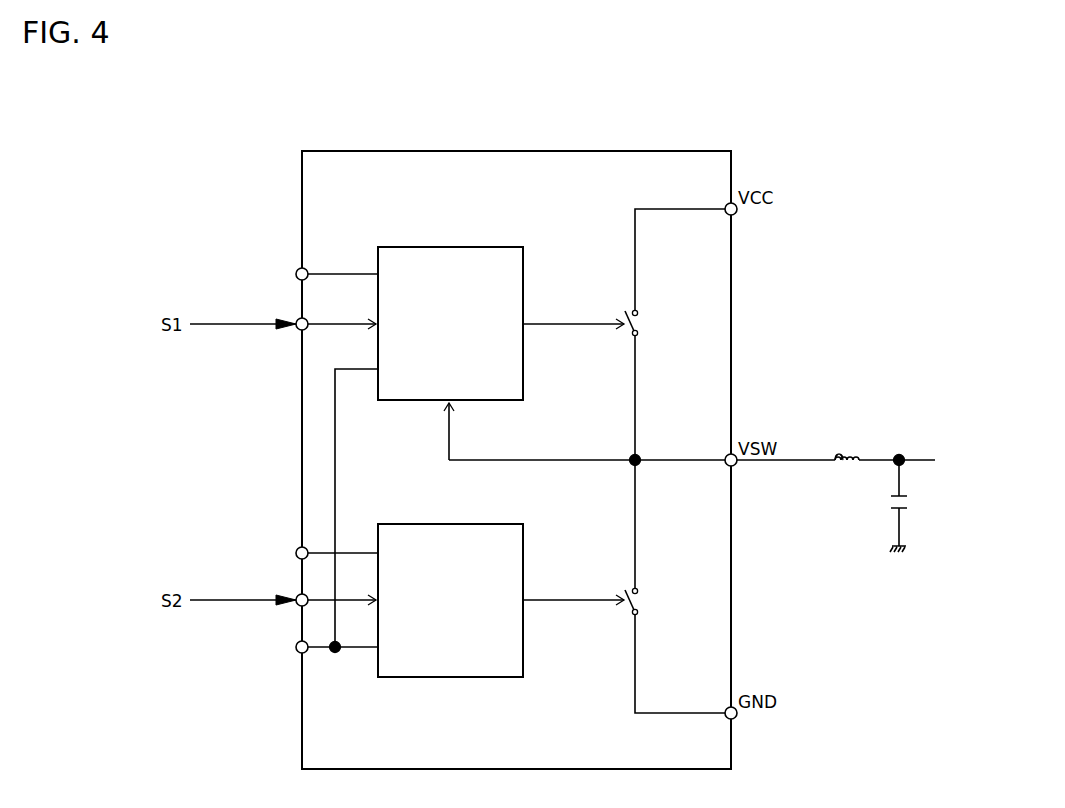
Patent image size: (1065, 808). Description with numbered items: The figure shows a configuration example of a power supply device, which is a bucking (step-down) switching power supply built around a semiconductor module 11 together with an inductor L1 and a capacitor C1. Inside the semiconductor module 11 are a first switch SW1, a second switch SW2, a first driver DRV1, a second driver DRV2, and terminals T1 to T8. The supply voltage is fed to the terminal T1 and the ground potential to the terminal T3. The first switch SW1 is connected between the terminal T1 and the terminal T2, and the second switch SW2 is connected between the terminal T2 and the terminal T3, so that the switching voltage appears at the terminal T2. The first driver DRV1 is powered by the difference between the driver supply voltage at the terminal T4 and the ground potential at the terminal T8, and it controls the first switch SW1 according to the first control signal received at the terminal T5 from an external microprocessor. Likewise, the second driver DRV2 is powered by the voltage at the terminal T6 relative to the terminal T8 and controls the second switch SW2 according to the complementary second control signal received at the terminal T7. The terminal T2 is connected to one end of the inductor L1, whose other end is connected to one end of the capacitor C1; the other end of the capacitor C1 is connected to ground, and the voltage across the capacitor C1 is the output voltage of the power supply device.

The semiconductor module 11 is at (520, 151).
The first driver DRV1 is at (451, 248).
The second driver DRV2 is at (451, 525).
The first switch SW1 is at (644, 332).
The second switch SW2 is at (644, 609).
The terminal T1 is at (738, 214).
The terminal T2 is at (738, 465).
The terminal T3 is at (738, 718).
The terminal T4 is at (296, 280).
The terminal T5 is at (296, 331).
The terminal T6 is at (296, 559).
The terminal T7 is at (296, 606).
The terminal T8 is at (296, 653).
The inductor L1 is at (846, 452).
The capacitor C1 is at (908, 504).